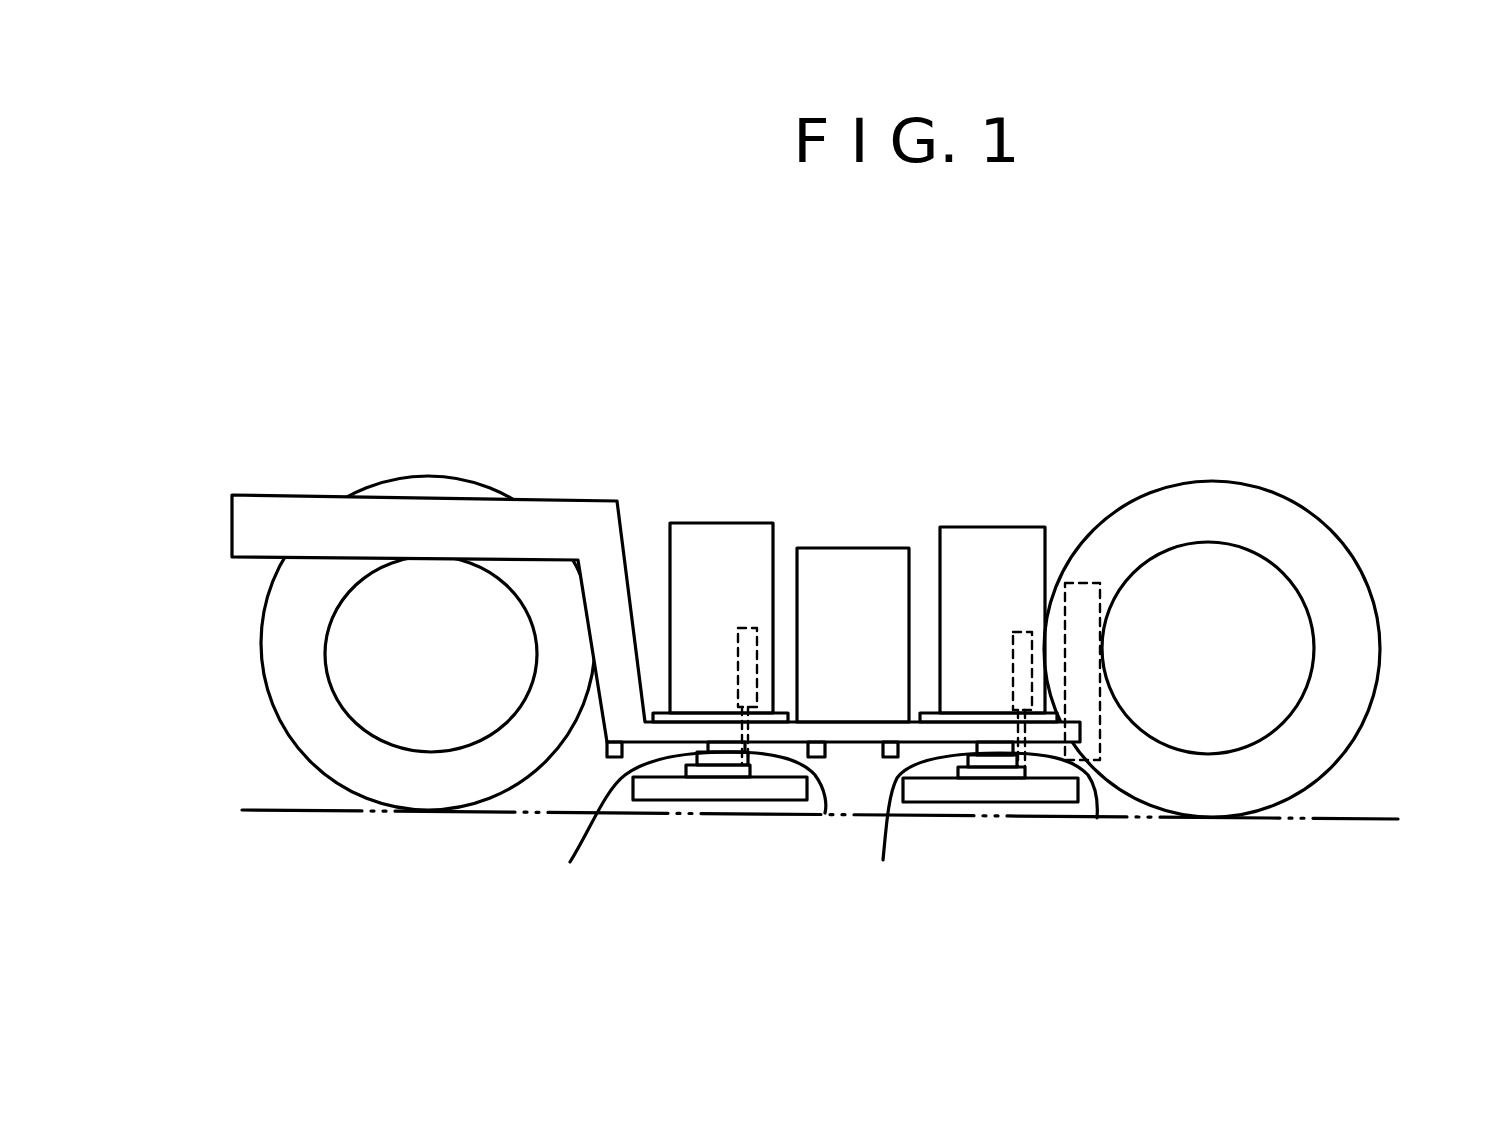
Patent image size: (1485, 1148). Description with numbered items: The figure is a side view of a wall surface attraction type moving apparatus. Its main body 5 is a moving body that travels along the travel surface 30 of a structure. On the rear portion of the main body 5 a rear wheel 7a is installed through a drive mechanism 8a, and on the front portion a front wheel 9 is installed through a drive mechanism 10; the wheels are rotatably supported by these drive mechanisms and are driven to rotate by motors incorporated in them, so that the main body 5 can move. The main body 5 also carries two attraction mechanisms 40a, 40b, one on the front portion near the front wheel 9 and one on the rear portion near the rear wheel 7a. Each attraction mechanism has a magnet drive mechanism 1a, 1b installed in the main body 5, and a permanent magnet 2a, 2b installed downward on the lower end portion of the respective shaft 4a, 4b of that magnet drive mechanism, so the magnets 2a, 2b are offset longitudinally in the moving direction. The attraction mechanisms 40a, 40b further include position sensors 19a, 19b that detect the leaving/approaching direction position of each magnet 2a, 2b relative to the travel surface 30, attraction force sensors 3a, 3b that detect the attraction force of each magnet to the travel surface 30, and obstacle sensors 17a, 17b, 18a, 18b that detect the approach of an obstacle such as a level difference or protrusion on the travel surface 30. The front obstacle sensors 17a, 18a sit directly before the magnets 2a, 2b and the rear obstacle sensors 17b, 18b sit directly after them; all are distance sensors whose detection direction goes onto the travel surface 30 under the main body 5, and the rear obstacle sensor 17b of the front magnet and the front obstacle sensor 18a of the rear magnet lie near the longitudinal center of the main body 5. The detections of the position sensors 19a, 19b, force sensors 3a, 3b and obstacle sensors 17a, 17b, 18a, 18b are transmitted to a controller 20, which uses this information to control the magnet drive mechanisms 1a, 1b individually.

The magnet drive mechanism 1a is at (742, 523).
The magnet drive mechanism 1b is at (982, 523).
The magnet 2a is at (712, 800).
The magnet 2b is at (1000, 802).
The attraction force sensor 3a is at (681, 828).
The attraction force sensor 3b is at (980, 830).
The shaft 4a is at (825, 813).
The shaft 4b is at (1097, 818).
The main body 5 is at (623, 537).
The rear wheel 7a is at (1335, 537).
The drive mechanism 8a is at (1313, 672).
The front wheel 9 is at (305, 760).
The drive mechanism 10 is at (327, 668).
The front obstacle sensor 17a is at (605, 757).
The rear obstacle sensor 17b is at (830, 752).
The front obstacle sensor 18a is at (883, 748).
The rear obstacle sensor 18b is at (1083, 745).
The position sensor 19a is at (742, 627).
The position sensor 19b is at (1016, 632).
The controller 20 is at (863, 548).
The travel surface 30 is at (1379, 818).
The attraction mechanism 40a is at (717, 513).
The attraction mechanism 40b is at (1027, 510).